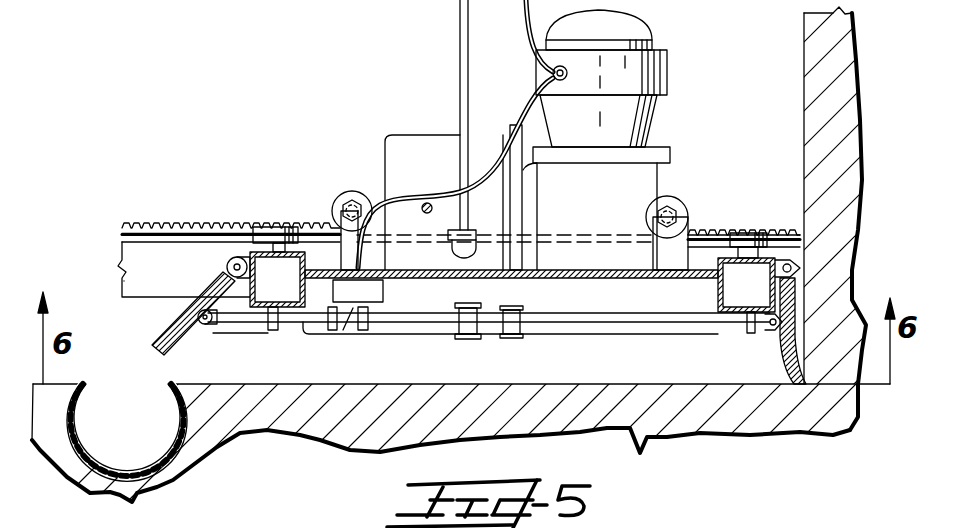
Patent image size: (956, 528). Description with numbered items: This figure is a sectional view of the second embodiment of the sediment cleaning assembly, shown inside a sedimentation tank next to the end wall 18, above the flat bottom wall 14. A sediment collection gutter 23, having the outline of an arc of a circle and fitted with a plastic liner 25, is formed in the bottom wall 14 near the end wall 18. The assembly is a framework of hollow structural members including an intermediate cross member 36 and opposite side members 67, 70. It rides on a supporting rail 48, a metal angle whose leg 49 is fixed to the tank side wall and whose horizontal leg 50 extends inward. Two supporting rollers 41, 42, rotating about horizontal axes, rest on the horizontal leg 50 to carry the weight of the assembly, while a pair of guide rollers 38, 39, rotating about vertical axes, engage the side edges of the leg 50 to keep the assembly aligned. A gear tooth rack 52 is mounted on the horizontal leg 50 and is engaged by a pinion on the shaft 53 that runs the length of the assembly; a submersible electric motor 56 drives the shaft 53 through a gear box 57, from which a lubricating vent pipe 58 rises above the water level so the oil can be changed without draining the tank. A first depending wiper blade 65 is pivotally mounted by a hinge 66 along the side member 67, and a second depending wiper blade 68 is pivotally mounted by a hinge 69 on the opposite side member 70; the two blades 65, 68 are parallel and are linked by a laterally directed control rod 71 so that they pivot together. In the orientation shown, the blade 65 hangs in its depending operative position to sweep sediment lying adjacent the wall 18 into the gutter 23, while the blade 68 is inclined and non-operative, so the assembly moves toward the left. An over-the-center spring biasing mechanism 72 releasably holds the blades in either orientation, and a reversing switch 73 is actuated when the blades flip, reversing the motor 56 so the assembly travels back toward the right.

The bottom wall 14 is at (431, 384).
The end wall 18 is at (804, 109).
The sediment collection gutter 23 is at (162, 398).
The plastic liner 25 is at (164, 458).
The cross member 36 is at (639, 278).
The guide roller 38 is at (750, 233).
The guide roller 39 is at (280, 226).
The supporting roller 41 is at (674, 197).
The supporting roller 42 is at (364, 166).
The supporting rail 48 is at (128, 251).
The leg 49 is at (125, 281).
The horizontal leg 50 is at (122, 239).
The gear tooth rack 52 is at (200, 222).
The shaft 53 is at (427, 206).
The submersible electric motor 56 is at (664, 72).
The gear box 57 is at (436, 98).
The lubricating vent pipe 58 is at (459, 46).
The first depending wiper blade 65 is at (782, 361).
The hinge 66 is at (795, 267).
The side member 67 is at (720, 300).
The second depending wiper blade 68 is at (169, 340).
The hinge 69 is at (226, 265).
The side member 70 is at (252, 304).
The control rod 71 is at (586, 337).
The over-the-center spring biasing mechanism 72 is at (476, 304).
The reversing switch 73 is at (360, 312).